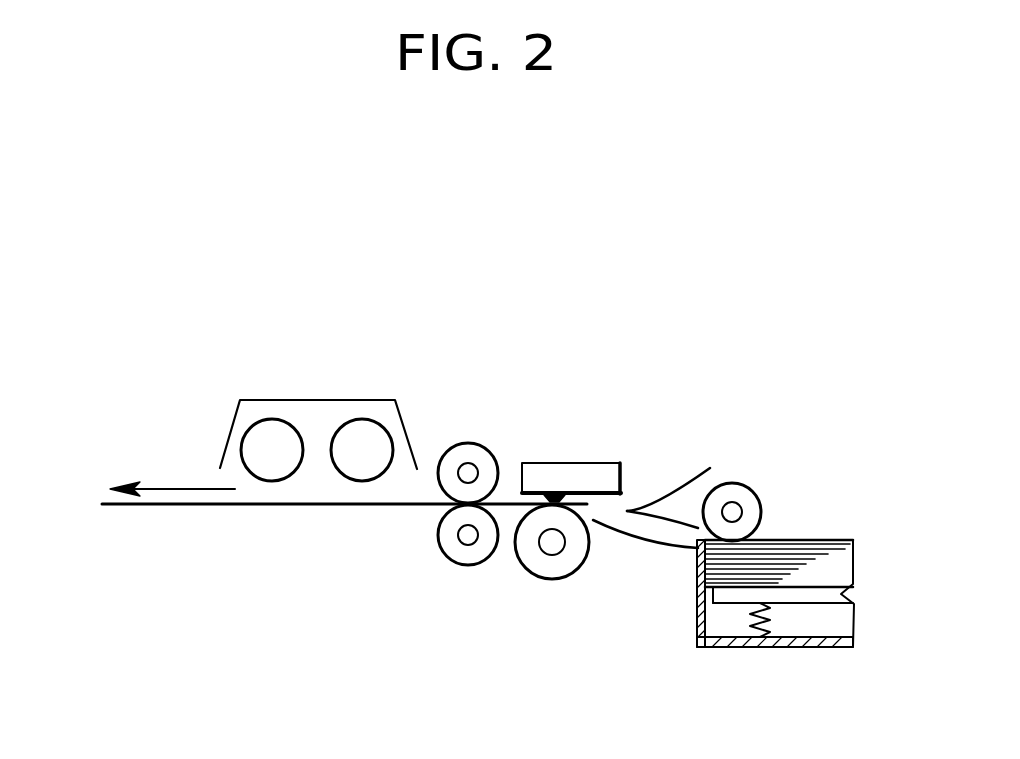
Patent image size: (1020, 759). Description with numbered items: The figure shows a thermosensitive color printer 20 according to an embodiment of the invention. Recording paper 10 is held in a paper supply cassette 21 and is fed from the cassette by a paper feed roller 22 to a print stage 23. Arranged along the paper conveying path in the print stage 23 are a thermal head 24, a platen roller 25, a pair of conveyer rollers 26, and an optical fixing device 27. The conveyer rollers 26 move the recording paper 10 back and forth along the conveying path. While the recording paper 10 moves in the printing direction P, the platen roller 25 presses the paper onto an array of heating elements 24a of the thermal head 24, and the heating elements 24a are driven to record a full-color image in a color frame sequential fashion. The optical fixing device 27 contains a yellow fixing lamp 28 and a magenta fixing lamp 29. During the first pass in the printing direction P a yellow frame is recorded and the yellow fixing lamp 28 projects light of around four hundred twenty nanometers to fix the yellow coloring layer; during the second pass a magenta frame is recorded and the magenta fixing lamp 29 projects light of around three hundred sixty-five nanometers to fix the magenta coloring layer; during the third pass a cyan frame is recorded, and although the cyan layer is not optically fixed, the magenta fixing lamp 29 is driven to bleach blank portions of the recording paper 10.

The recording paper 10 is at (305, 505).
The thermosensitive color printer 20 is at (416, 252).
The paper supply cassette 21 is at (697, 604).
The paper feed roller 22 is at (737, 493).
The print stage 23 is at (570, 328).
The thermal head 24 is at (578, 473).
The heating elements 24a is at (542, 498).
The platen roller 25 is at (553, 572).
The conveyer rollers 26 is at (465, 553).
The optical fixing device 27 is at (307, 366).
The yellow fixing lamp 28 is at (367, 433).
The magenta fixing lamp 29 is at (270, 428).
The printing direction P is at (178, 489).